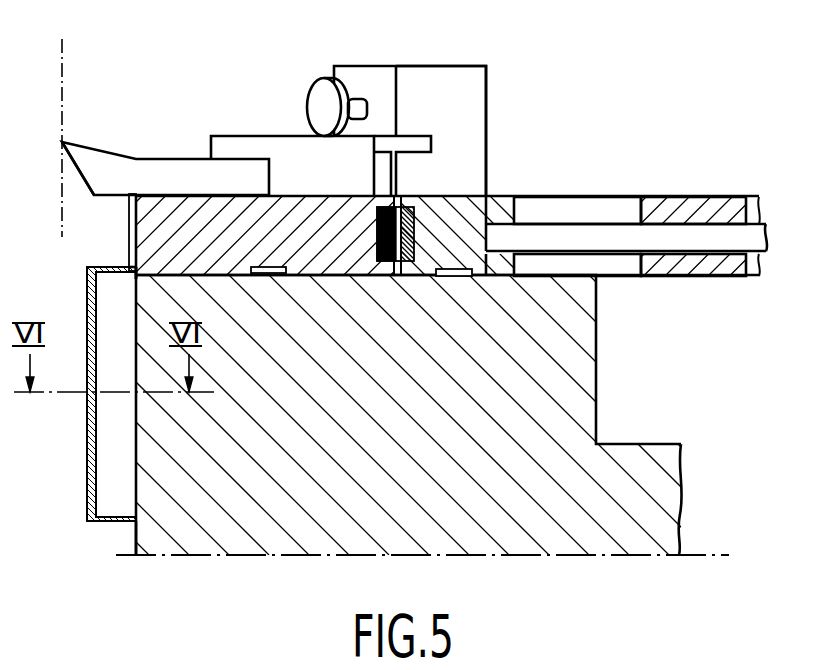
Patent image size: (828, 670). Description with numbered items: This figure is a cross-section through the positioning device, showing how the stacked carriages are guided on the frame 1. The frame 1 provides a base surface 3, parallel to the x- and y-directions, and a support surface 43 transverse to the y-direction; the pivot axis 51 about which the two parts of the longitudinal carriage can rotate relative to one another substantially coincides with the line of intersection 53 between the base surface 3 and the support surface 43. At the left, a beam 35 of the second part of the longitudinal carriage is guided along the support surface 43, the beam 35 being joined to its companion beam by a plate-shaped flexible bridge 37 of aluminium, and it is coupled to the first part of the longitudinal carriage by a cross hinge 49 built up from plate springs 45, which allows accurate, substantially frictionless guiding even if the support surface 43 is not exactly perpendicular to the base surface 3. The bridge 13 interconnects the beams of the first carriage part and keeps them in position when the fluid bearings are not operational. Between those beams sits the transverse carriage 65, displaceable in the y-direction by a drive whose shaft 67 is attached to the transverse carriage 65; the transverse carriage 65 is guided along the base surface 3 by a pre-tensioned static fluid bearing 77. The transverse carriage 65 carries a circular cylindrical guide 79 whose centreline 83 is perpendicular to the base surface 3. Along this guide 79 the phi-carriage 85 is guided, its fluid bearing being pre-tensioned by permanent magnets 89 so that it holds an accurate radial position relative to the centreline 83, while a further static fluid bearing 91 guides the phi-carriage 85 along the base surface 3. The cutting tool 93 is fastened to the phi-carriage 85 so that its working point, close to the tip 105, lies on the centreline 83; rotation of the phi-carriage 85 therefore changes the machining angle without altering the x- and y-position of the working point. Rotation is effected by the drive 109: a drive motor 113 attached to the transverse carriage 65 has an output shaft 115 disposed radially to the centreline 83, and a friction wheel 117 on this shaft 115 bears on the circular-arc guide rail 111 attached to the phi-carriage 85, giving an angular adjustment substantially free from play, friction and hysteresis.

The frame 1 is at (307, 545).
The base surface 3 is at (542, 276).
The bridge 13 is at (706, 205).
The beam 35 is at (113, 508).
The plate-shaped flexible bridge 37 is at (88, 430).
The support surface 43 is at (135, 535).
The plate springs 45 is at (131, 228).
The cross hinge 49 is at (130, 268).
The pivot axis 51 is at (138, 272).
The line of intersection 53 is at (138, 272).
The transverse carriage 65 is at (498, 208).
The shaft 67 is at (742, 241).
The static fluid bearing 77 is at (455, 278).
The circular cylindrical guide 79 is at (395, 270).
The centreline 83 is at (63, 72).
The phi-carriage 85 is at (286, 210).
The permanent magnets 89 is at (414, 213).
The static fluid bearing 91 is at (262, 275).
The cutting tool 93 is at (163, 170).
The tip 105 is at (63, 143).
The drive 109 is at (386, 112).
The guide rail 111 is at (265, 152).
The drive motor 113 is at (470, 96).
The output shaft 115 is at (360, 108).
The friction wheel 117 is at (322, 97).